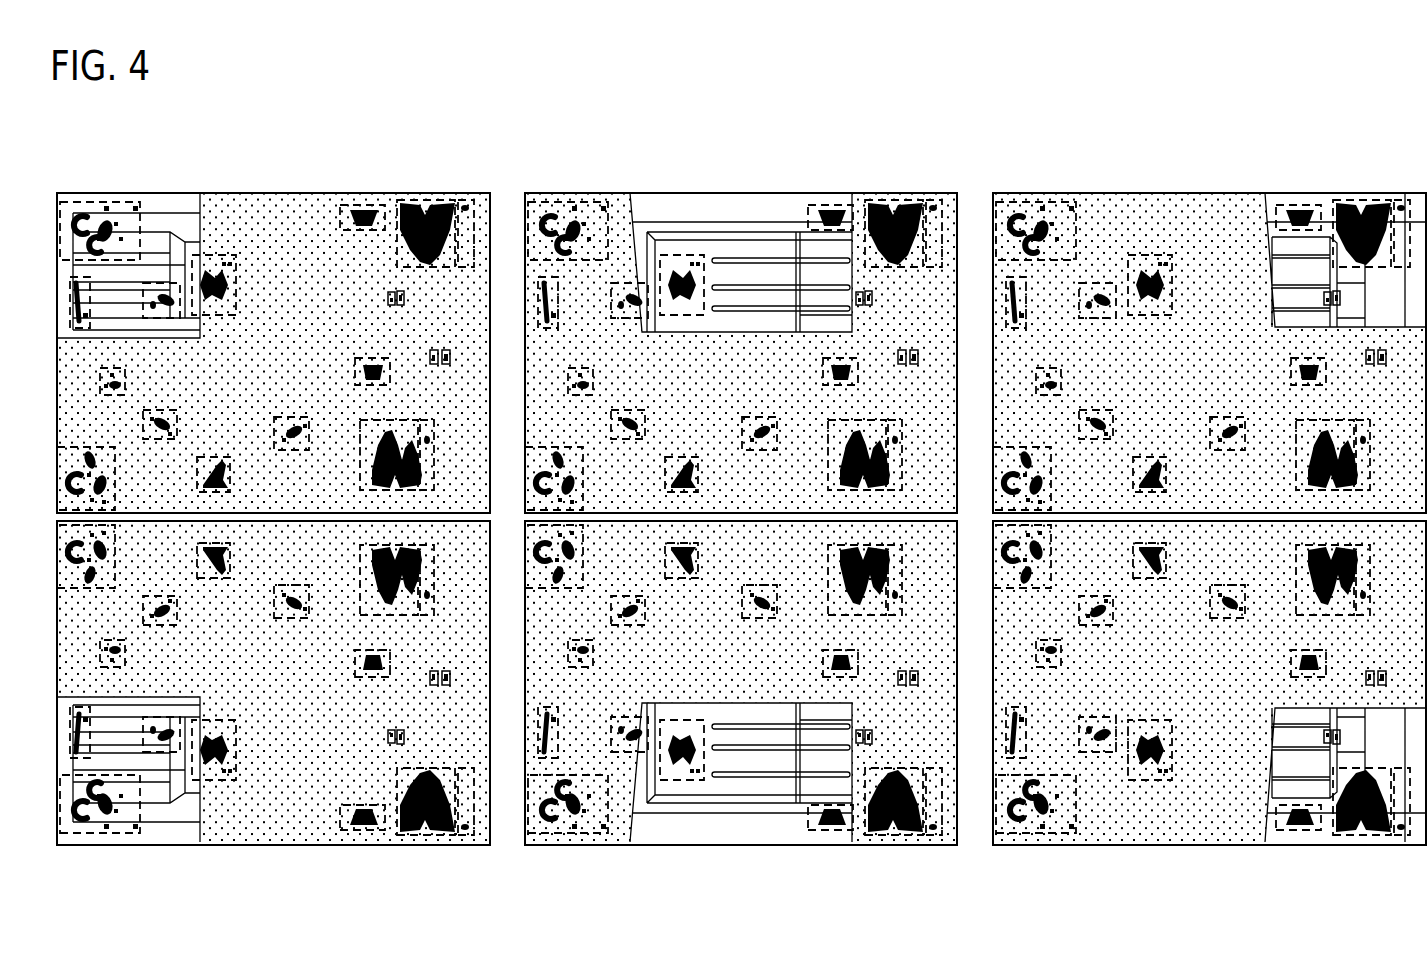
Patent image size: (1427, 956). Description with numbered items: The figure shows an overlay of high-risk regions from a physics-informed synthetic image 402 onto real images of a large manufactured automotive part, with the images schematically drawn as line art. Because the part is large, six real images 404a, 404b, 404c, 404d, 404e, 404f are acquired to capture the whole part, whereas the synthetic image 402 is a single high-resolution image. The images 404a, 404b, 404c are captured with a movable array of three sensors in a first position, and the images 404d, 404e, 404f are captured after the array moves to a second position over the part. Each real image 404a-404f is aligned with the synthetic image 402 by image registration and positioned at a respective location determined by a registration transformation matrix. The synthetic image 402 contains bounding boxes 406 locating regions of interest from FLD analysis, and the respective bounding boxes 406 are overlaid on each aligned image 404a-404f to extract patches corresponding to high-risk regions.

The synthetic image 402 is at (1238, 662).
The real image 404a is at (175, 190).
The real image 404b is at (772, 190).
The real image 404c is at (1322, 190).
The real image 404d is at (175, 848).
The real image 404e is at (780, 848).
The real image 404f is at (1322, 848).
The bounding box 406 is at (1280, 866).